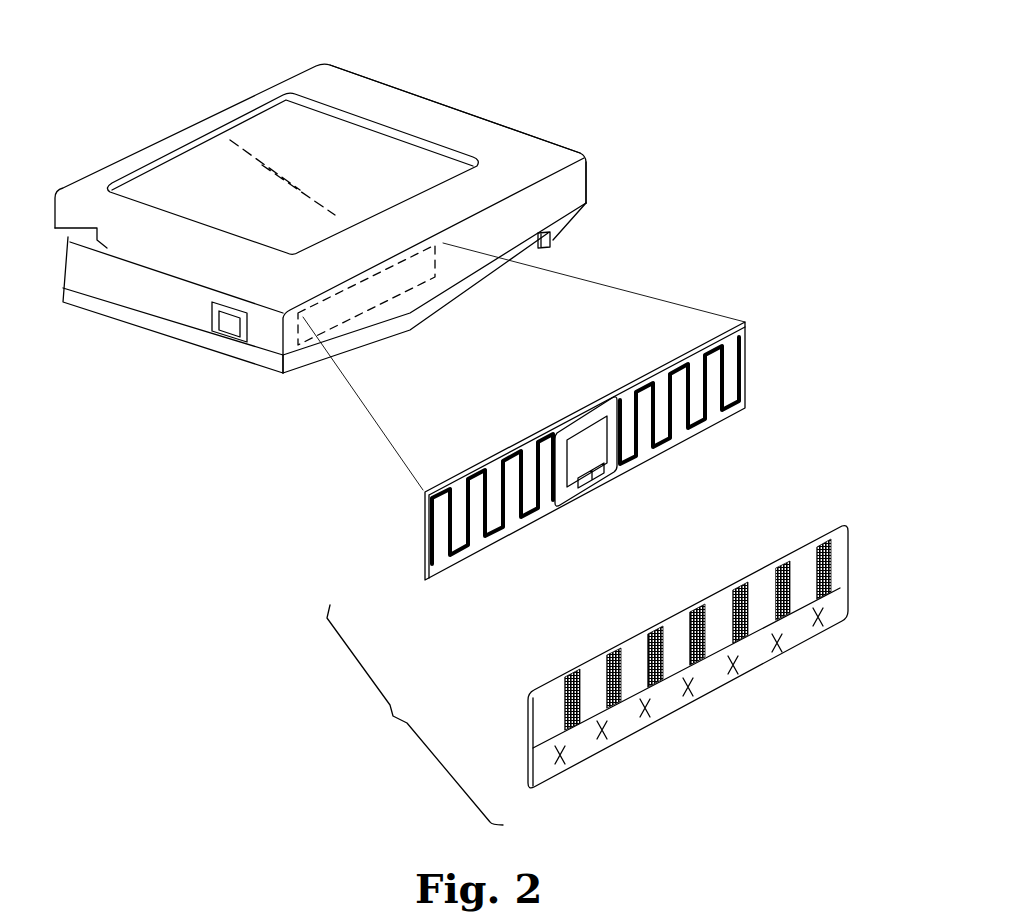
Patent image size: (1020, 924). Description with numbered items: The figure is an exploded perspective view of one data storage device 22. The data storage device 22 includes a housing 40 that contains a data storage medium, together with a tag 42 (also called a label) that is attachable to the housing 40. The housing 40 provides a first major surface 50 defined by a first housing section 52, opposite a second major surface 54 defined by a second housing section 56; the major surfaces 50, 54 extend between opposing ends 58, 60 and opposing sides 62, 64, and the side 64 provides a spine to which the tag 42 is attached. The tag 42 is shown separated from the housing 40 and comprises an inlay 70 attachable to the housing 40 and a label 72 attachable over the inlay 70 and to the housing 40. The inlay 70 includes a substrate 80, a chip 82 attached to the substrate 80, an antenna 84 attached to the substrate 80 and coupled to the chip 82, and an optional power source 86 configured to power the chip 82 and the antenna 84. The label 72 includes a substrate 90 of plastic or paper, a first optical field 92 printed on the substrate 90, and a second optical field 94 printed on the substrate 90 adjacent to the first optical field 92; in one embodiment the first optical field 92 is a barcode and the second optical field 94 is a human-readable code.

The data storage device 22 is at (582, 84).
The housing 40 is at (386, 84).
The tag 42 is at (415, 715).
The first major surface 50 is at (426, 108).
The first housing section 52 is at (588, 165).
The second major surface 54 is at (155, 333).
The second housing section 56 is at (248, 360).
The end 58 is at (105, 299).
The end 60 is at (480, 118).
The side 62 is at (196, 124).
The side 64 is at (575, 192).
The inlay 70 is at (743, 330).
The label 72 is at (850, 525).
The substrate 80 is at (517, 445).
The chip 82 is at (590, 415).
The antenna 84 is at (490, 467).
The power source 86 is at (572, 425).
The substrate 90 is at (548, 680).
The first optical field 92 is at (617, 676).
The second optical field 94 is at (626, 722).